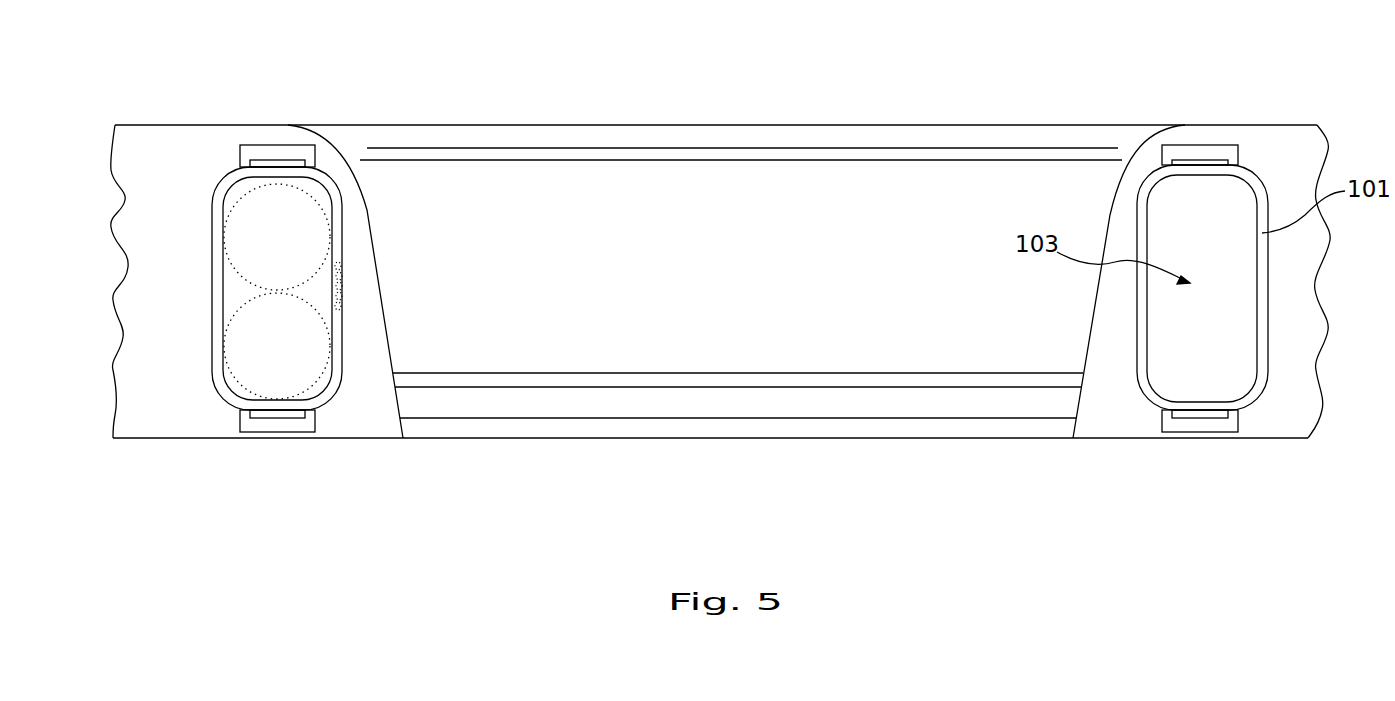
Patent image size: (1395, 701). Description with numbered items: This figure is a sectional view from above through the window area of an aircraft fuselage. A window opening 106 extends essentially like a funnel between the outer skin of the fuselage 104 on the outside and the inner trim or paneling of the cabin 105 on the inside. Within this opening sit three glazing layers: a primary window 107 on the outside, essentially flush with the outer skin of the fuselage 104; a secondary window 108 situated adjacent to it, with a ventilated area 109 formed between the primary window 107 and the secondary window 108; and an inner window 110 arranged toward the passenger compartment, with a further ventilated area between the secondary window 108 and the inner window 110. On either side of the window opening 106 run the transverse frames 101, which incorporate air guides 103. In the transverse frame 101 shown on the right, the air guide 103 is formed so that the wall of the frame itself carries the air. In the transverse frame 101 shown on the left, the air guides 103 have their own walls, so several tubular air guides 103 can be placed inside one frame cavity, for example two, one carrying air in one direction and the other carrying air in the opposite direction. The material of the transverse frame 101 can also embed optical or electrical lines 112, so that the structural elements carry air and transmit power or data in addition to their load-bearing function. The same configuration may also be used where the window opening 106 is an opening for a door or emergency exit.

The transverse frame 101 is at (300, 288).
The air guide 103 is at (310, 228).
The outer skin of the fuselage 104 is at (398, 445).
The inner trim or paneling of the cabin 105 is at (190, 125).
The window opening 106 is at (713, 120).
The primary window 107 is at (873, 428).
The secondary window 108 is at (970, 379).
The ventilated area 109 is at (730, 398).
The inner window 110 is at (835, 140).
The electrical lines 112 is at (334, 287).